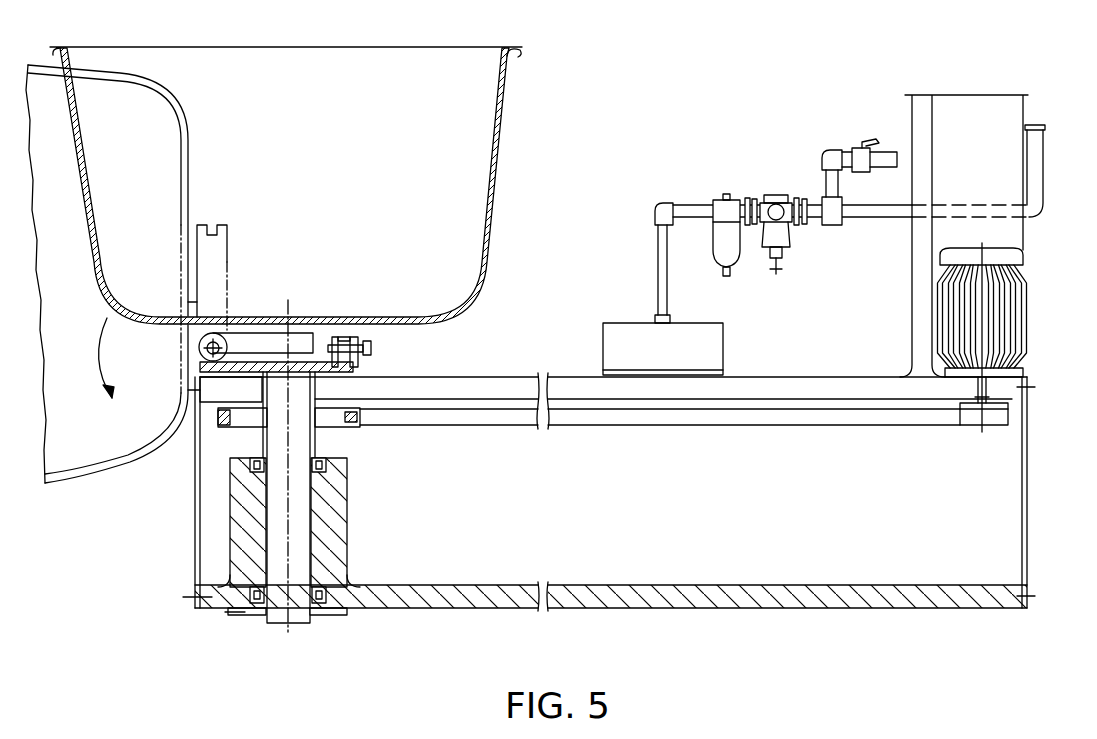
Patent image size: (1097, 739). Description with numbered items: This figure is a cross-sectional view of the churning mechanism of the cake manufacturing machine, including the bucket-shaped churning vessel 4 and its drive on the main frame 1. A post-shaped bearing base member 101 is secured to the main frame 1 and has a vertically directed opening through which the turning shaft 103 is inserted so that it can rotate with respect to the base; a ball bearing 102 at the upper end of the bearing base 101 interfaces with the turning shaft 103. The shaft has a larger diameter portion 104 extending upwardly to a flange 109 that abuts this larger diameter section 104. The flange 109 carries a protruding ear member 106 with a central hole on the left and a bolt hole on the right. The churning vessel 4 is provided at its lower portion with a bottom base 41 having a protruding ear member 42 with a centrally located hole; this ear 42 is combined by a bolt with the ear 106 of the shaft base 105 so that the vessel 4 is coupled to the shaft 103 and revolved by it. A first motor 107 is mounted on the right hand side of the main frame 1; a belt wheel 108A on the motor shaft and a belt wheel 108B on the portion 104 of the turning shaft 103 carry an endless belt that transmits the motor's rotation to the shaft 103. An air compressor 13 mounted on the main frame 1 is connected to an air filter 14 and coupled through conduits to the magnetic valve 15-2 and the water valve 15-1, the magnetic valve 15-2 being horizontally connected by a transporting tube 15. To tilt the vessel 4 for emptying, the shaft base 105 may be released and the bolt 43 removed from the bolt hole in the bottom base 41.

The main frame 1 is at (998, 533).
The churning vessel 4 is at (495, 157).
The air compressor 13 is at (710, 345).
The air filter 14 is at (745, 195).
The transporting tube 15 is at (1035, 170).
The water valve 15-1 is at (856, 146).
The magnetic valve 15-2 is at (828, 213).
The bottom base 41 is at (315, 343).
The protruding ear member 42 is at (220, 345).
The bolt 43 is at (369, 351).
The post-shaped bearing base member 101 is at (330, 561).
The ball bearing 102 is at (327, 464).
The turning shaft 103 is at (297, 502).
The larger diameter portion 104 is at (305, 445).
The shaft base 105 is at (352, 366).
The protruding ear member 106 is at (207, 371).
The first motor 107 is at (1013, 320).
The belt wheel 108A is at (990, 428).
The belt wheel 108B is at (228, 423).
The flange 109 is at (370, 341).